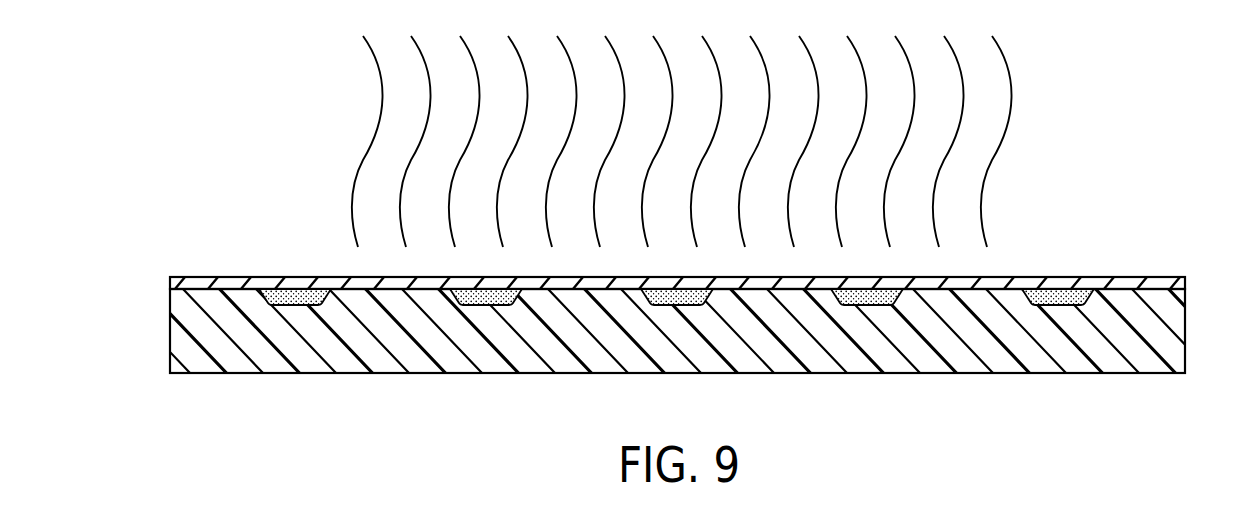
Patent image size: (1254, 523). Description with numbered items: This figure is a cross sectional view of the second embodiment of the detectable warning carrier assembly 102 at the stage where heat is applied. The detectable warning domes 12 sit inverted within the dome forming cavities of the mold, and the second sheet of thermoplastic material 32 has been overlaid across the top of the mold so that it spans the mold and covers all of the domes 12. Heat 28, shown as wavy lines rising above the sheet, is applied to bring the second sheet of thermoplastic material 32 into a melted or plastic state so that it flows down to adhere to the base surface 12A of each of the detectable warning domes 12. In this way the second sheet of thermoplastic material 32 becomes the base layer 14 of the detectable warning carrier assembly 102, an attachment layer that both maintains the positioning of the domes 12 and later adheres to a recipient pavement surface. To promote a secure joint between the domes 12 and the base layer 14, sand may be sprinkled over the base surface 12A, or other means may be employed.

The detectable warning carrier assembly 102 is at (158, 251).
The heat 28 is at (1007, 58).
The second sheet of thermoplastic material 32 is at (1185, 277).
The base layer 14 is at (680, 323).
The detectable warning domes 12 is at (1100, 297).
The base surface 12A is at (1033, 290).